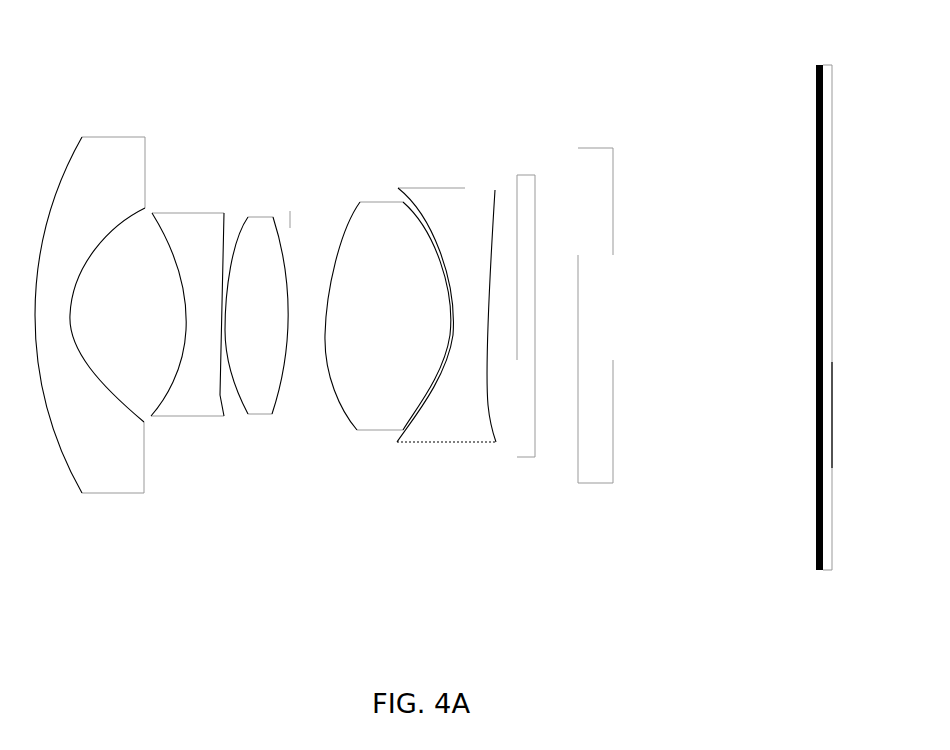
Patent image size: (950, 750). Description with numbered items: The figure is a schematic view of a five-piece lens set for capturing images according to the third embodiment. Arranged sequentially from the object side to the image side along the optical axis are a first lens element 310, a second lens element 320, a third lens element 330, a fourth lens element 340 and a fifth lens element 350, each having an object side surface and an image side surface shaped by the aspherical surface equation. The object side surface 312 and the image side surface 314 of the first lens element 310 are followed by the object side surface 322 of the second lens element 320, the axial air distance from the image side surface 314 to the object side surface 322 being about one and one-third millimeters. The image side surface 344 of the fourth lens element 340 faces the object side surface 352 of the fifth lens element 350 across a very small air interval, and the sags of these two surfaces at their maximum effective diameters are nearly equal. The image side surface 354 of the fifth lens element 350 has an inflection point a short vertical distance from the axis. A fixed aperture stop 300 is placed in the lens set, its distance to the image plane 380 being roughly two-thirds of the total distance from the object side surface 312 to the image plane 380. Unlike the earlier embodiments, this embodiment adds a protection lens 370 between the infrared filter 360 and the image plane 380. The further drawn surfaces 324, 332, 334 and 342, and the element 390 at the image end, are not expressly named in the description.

The fixed aperture stop 300 is at (292, 212).
The first lens element 310 is at (88, 326).
The object side surface of the first lens element 312 is at (63, 457).
The image side surface of the first lens element 314 is at (123, 407).
The second lens element 320 is at (187, 326).
The object side surface of the second lens element 322 is at (168, 395).
The image-side surface of second lens element 324 is at (220, 393).
The third lens element 330 is at (275, 326).
The object-side surface of third lens element 332 is at (239, 400).
The image-side surface of third lens element 334 is at (281, 377).
The fourth lens element 340 is at (388, 326).
The object-side surface of fourth lens element 342 is at (338, 396).
The image side surface of the fourth lens element 344 is at (412, 444).
The fifth lens element 350 is at (467, 326).
The object side surface of the fifth lens element 352 is at (433, 393).
The image side surface of the fifth lens element 354 is at (487, 410).
The infrared filter 360 is at (525, 175).
The protection lens 370 is at (600, 148).
The image plane 380 is at (818, 108).
The image sensor 390 is at (835, 115).